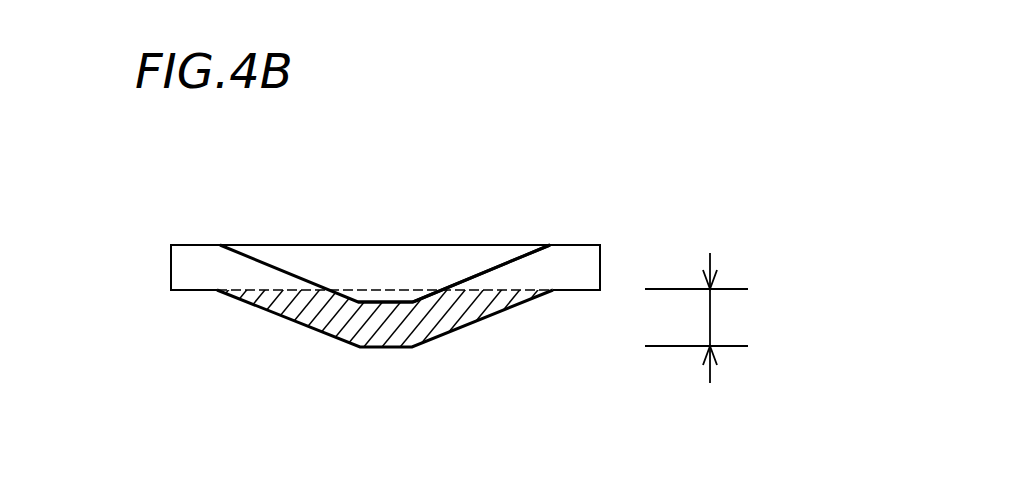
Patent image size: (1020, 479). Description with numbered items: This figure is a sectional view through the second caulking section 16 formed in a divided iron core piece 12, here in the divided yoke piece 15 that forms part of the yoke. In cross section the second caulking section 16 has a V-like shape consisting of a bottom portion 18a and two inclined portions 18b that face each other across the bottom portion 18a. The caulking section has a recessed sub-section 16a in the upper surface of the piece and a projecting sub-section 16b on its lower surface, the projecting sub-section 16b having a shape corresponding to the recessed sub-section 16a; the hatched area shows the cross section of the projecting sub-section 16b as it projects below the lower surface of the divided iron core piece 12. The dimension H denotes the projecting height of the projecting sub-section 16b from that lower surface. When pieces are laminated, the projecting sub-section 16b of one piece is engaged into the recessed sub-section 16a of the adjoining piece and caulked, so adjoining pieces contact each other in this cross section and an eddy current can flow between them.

The divided iron core piece 12 is at (578, 267).
The divided yoke piece 15 is at (483, 205).
The second caulking section 16 is at (445, 230).
The recessed sub-section 16a is at (373, 302).
The projecting sub-section 16b is at (482, 300).
The bottom portion 18a is at (392, 322).
The inclined portion 18b is at (453, 328).
The projecting height H is at (713, 318).